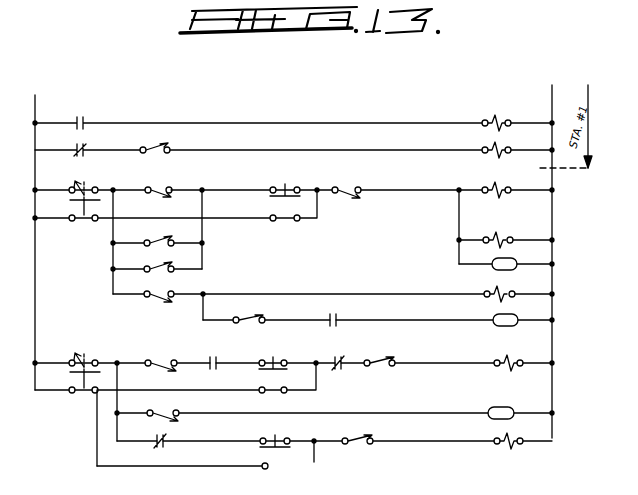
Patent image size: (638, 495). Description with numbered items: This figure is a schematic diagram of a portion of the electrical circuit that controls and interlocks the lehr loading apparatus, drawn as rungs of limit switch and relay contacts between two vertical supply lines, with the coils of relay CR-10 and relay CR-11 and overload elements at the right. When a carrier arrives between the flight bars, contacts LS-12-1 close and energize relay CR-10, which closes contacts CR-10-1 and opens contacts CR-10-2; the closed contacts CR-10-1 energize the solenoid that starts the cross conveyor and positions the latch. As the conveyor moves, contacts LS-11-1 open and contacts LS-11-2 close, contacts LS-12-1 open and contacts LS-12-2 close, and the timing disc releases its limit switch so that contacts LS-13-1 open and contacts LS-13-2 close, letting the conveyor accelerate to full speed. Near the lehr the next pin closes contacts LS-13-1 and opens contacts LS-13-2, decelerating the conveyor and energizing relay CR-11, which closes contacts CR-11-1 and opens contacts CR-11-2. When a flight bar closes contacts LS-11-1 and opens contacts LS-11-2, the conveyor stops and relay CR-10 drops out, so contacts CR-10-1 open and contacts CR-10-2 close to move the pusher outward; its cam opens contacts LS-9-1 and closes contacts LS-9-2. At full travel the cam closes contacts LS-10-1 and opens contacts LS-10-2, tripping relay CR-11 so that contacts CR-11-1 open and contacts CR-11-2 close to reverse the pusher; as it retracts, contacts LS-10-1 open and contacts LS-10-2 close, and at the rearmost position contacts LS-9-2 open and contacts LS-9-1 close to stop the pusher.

The contacts LS12-1 of limit switch LS12 LS-12-1 is at (150, 184).
The contacts LS9-1 of limit switch LS9 LS-9-1 is at (343, 184).
The contacts LS13-2 of limit switch LS13 LS-13-2 is at (150, 235).
The contacts LS11-2 of limit switch LS11 LS-11-2 is at (150, 261).
The contacts LS13-1 of limit switch LS13 LS-13-1 is at (150, 289).
The contacts LS12-2 of limit switch LS12 LS-12-2 is at (241, 313).
The contacts CR10-1 of relay CR10 CR-10-1 is at (334, 314).
The relay CR10 CR-10 is at (494, 269).
The relay CR11 CR-11 is at (492, 322).
The contacts LS11-1 of limit switch LS11 LS-11-1 is at (154, 358).
The contacts CR11-1 of relay CR11 CR-11-1 is at (214, 357).
The contacts CR10-2 of relay CR10 CR-10-2 is at (333, 357).
The contacts LS10-2 of limit switch LS10 LS-10-2 is at (375, 370).
The contacts LS10-1 of limit switch LS10 LS-10-1 is at (157, 408).
The contacts CR11-2 of relay CR11 CR-11-2 is at (154, 447).
The contacts LS9-2 of limit switch LS9 LS-9-2 is at (348, 433).